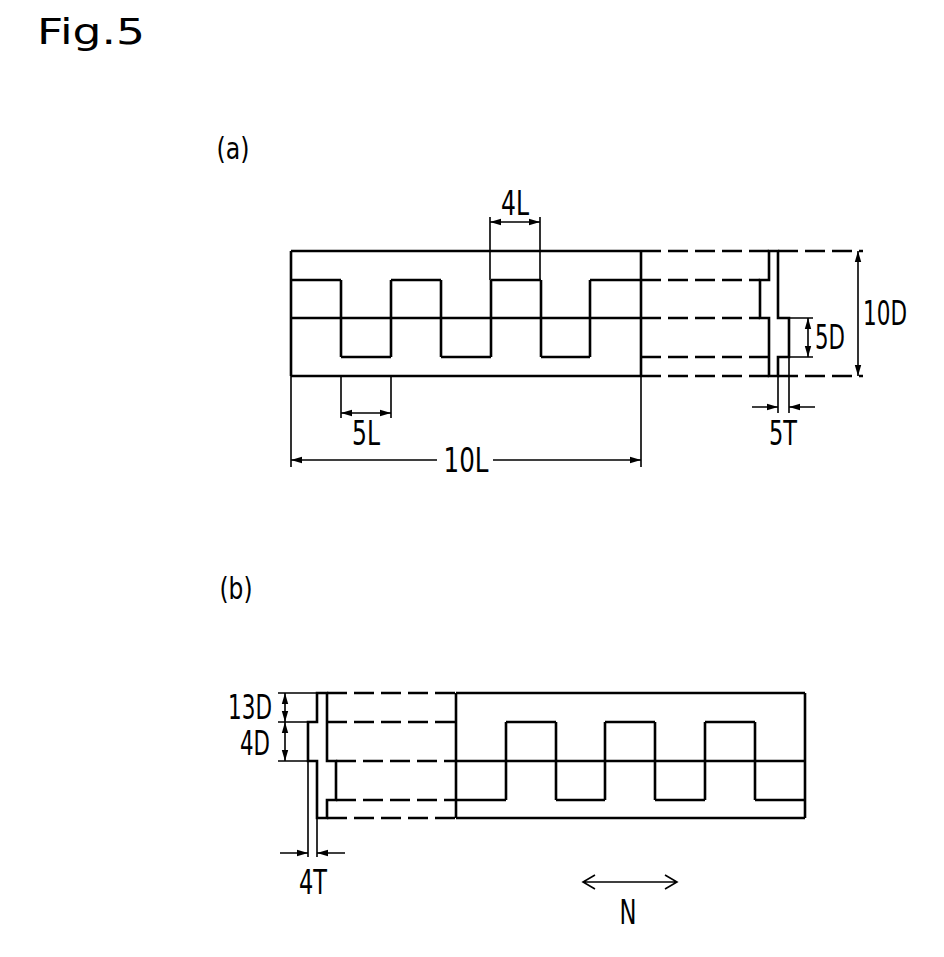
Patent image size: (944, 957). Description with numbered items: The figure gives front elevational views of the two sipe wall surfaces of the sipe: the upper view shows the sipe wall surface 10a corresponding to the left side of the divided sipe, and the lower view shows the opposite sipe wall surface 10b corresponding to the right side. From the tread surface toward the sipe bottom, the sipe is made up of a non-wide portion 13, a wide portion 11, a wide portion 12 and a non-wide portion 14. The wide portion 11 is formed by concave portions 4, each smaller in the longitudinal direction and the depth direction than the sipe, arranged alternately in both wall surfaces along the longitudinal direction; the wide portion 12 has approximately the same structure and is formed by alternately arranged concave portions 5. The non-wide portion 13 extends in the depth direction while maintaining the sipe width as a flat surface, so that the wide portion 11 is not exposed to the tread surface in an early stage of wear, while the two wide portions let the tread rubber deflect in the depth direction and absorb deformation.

The concave portion 4 is at (419, 290).
The concave portion 5 is at (465, 345).
The sipe wall surface 10a is at (457, 267).
The sipe wall surface 10b is at (593, 710).
The wide portion 11 is at (265, 281).
The wide portion 12 is at (265, 319).
The non-wide portion 13 is at (265, 252).
The non-wide portion 14 is at (265, 357).